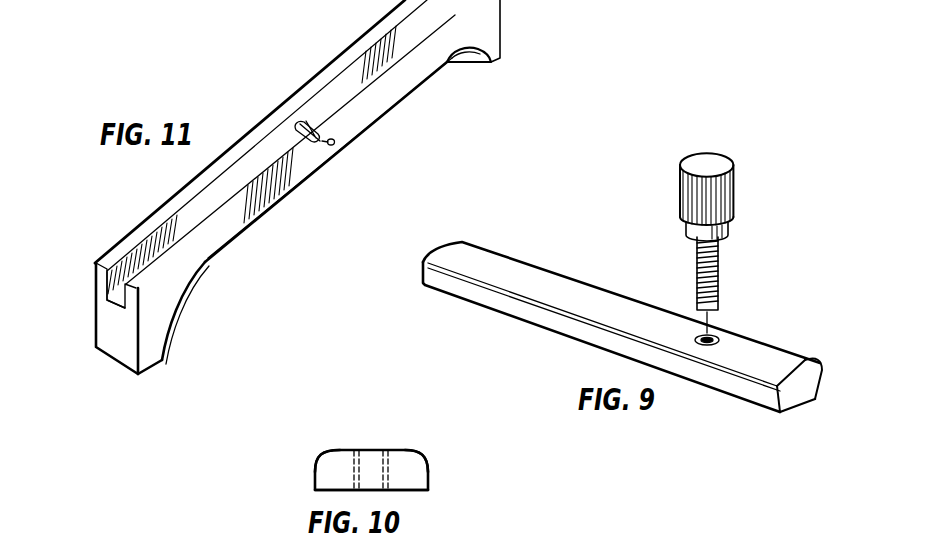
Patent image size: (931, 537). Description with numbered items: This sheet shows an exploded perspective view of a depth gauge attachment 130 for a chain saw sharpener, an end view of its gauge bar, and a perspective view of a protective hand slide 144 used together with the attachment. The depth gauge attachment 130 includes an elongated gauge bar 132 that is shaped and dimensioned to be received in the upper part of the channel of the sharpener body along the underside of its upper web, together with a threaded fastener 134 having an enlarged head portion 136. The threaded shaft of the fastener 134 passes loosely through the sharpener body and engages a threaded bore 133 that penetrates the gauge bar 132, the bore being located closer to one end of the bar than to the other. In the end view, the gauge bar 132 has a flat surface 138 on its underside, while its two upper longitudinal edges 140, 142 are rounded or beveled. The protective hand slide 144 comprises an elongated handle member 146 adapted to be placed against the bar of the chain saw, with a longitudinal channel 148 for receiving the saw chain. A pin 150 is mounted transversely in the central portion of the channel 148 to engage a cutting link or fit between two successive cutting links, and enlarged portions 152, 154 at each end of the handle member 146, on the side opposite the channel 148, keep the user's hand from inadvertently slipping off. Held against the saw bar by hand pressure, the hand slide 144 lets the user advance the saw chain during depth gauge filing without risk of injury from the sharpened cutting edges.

In FIG. 9, the depth gauge attachment 130 is at (763, 281).
In FIG. 9, the gauge bar 132 is at (527, 273).
In FIG. 10, the gauge bar 132 is at (394, 450).
In FIG. 9, the threaded bore 133 is at (712, 336).
In FIG. 10, the threaded bore 133 is at (366, 458).
In FIG. 9, the threaded fastener 134 is at (690, 266).
In FIG. 9, the enlarged head portion 136 is at (724, 204).
In FIG. 9, the flat surface 138 is at (807, 400).
In FIG. 10, the flat surface 138 is at (426, 490).
In FIG. 9, the upper longitudinal edge 140 is at (774, 395).
In FIG. 10, the upper longitudinal edge 140 is at (321, 459).
In FIG. 9, the upper longitudinal edge 142 is at (818, 363).
In FIG. 10, the upper longitudinal edge 142 is at (418, 458).
In FIG. 11, the protective hand slide 144 is at (293, 90).
In FIG. 11, the handle member 146 is at (241, 232).
In FIG. 11, the longitudinal channel 148 is at (109, 292).
In FIG. 11, the pin 150 is at (335, 144).
In FIG. 11, the enlarged portion 152 is at (167, 357).
In FIG. 11, the enlarged portion 154 is at (491, 60).